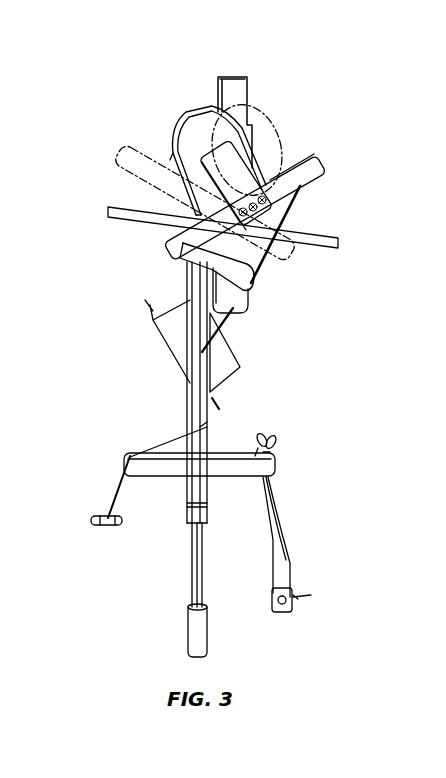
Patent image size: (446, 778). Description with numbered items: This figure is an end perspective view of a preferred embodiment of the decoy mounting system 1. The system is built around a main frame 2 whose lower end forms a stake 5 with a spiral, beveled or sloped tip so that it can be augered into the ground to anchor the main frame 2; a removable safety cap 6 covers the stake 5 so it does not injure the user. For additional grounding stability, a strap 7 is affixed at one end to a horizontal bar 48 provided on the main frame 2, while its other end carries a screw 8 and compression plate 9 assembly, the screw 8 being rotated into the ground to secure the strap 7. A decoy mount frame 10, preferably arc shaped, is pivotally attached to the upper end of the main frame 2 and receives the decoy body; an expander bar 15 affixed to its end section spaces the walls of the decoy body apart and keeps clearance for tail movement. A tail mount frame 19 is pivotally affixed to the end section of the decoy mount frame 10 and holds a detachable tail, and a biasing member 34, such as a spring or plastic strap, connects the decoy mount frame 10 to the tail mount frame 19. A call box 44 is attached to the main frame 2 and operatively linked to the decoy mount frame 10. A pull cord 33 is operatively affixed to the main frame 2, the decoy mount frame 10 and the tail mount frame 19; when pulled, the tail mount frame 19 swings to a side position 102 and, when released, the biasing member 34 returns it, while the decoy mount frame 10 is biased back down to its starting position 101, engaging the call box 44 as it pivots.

The decoy mounting system 1 is at (359, 110).
The main frame 2 is at (187, 405).
The stake 5 is at (195, 574).
The removable safety cap 6 is at (193, 643).
The strap 7 is at (288, 545).
The screw 8 is at (312, 595).
The compression plate 9 is at (274, 596).
The decoy mount frame 10 is at (199, 110).
The expander bar 15 is at (320, 250).
The tail mount frame 19 is at (305, 187).
The pull cord 33 is at (118, 492).
The biasing member 34 is at (244, 276).
The call box 44 is at (228, 368).
The horizontal bar 48 is at (171, 472).
The starting position 101 is at (325, 158).
The side position 102 is at (270, 108).